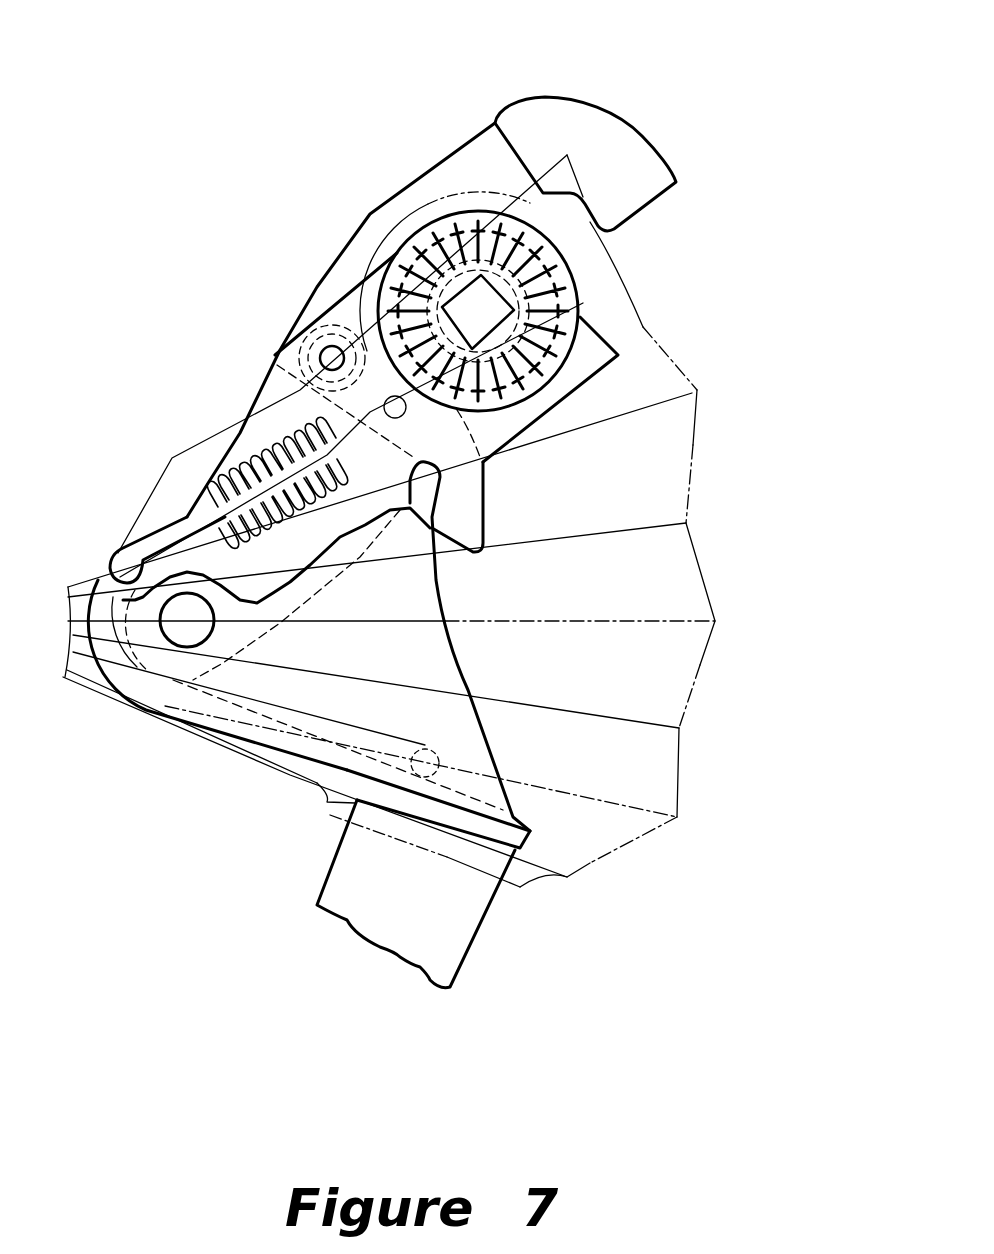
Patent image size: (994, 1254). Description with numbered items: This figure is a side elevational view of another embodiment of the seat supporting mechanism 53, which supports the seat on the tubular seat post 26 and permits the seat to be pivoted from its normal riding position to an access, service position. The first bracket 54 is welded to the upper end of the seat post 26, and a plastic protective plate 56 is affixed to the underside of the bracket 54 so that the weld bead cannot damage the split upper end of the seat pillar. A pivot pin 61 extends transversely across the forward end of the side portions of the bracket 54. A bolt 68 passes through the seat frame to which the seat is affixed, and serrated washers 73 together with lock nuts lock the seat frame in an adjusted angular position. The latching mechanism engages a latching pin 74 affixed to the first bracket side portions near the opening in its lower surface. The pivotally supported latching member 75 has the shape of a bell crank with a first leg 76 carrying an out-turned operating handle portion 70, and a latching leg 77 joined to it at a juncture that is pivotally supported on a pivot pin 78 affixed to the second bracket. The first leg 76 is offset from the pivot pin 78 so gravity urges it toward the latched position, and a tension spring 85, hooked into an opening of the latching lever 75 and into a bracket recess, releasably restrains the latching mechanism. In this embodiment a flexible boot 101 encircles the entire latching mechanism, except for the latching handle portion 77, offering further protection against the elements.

The seat post 26 is at (450, 940).
The seat supporting mechanism 53 is at (253, 457).
The first bracket 54 is at (420, 657).
The plastic protective plate 56 is at (483, 840).
The pivot pin 61 is at (187, 638).
The bolt 68 is at (483, 303).
The operating handle portion 70 is at (667, 167).
The serrated washers 73 is at (583, 302).
The latching pin 74 is at (439, 750).
The latching member 75 is at (408, 188).
The first leg 76 is at (477, 162).
The latching leg 77 is at (463, 512).
The pivot pin 78 is at (325, 345).
The tension spring 85 is at (243, 447).
The flexible boot 101 is at (704, 575).